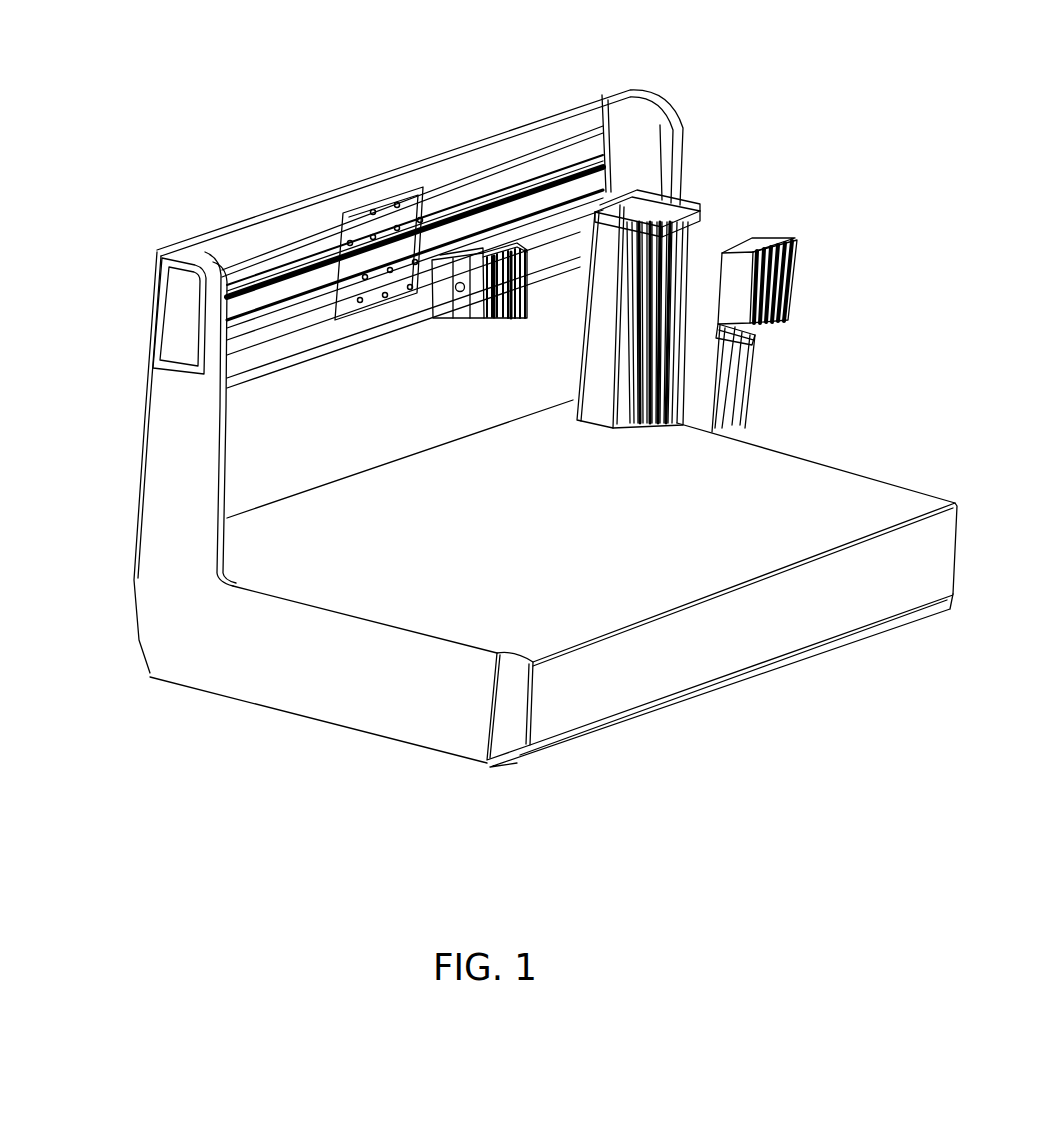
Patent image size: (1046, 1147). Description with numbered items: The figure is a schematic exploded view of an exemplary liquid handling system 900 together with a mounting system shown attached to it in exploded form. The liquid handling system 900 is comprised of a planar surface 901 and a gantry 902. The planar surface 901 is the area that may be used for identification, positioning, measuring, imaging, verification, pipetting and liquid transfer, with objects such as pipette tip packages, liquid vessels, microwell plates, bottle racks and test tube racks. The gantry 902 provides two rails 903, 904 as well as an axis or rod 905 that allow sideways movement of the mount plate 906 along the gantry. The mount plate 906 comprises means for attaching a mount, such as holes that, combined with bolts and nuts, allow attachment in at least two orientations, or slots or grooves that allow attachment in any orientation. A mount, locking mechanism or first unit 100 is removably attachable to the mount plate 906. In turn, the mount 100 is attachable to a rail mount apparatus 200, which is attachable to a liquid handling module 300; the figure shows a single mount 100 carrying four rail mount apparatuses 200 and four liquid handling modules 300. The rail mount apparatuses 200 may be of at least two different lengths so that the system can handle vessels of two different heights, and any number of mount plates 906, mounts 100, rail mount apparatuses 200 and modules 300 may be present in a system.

The liquid handling system 900 is at (172, 556).
The planar surface 901 is at (352, 537).
The gantry 902 is at (162, 253).
The rail 903 is at (482, 175).
The rail 904 is at (587, 191).
The axis or rod 905 is at (518, 192).
The mount plate 906 is at (345, 212).
The mount 100 is at (461, 316).
The rail mount apparatus 200 is at (684, 201).
The liquid handling module 300 is at (784, 237).